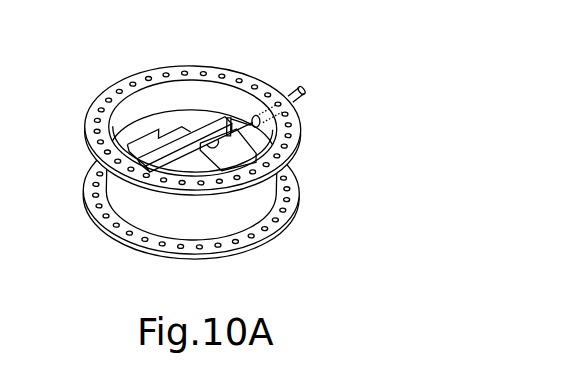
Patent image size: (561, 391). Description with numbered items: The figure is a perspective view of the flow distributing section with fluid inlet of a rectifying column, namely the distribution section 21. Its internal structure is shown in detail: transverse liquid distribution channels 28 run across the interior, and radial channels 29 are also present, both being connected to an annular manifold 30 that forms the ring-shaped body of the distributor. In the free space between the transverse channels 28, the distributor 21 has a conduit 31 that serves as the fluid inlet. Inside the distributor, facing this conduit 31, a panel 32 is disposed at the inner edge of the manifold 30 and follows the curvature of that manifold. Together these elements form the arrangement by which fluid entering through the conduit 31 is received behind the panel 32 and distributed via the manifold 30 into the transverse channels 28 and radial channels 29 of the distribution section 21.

The distribution section 21 is at (193, 137).
The transverse liquid distribution channels 28 is at (160, 153).
The radial channels 29 is at (176, 128).
The annular manifold 30 is at (123, 141).
The conduit 31 is at (305, 98).
The panel 32 is at (230, 118).